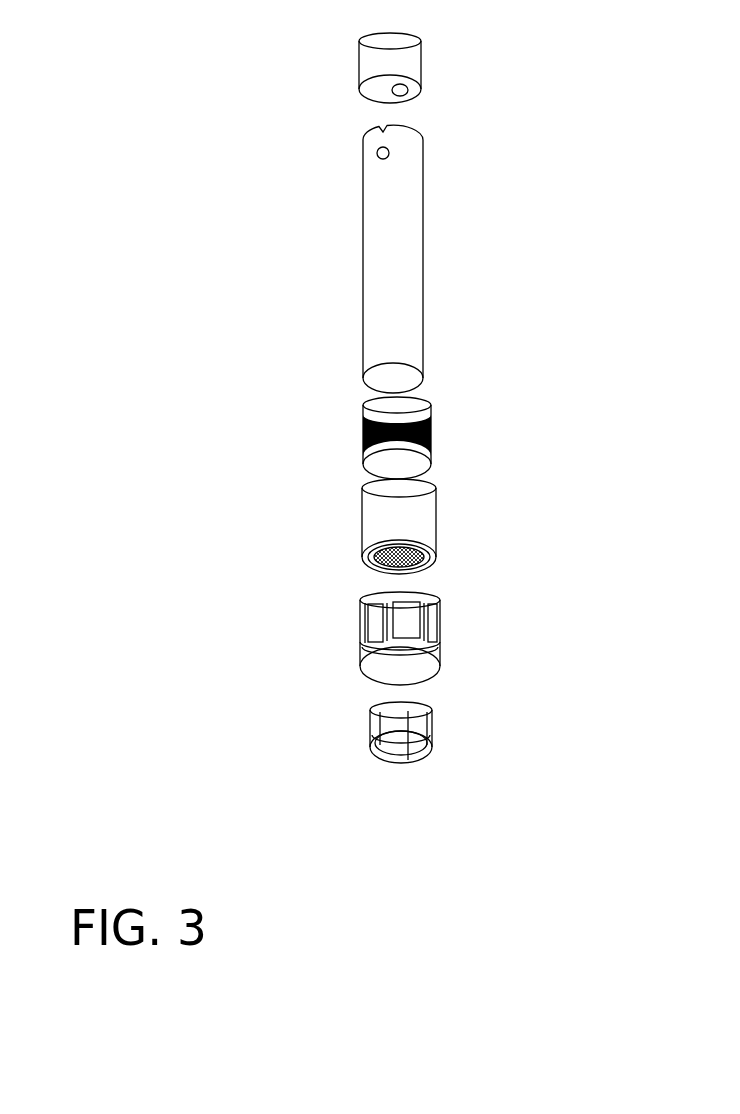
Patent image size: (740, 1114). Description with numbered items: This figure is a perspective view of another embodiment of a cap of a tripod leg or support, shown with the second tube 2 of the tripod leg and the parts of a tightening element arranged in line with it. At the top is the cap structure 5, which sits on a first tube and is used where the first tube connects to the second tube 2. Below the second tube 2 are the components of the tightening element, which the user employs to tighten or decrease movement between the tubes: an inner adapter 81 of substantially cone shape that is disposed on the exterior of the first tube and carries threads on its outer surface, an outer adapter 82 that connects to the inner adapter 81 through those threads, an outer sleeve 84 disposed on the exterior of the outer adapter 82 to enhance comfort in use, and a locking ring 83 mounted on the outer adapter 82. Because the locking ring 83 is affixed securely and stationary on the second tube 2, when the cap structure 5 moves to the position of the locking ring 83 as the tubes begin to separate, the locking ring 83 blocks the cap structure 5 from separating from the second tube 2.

The cap structure 5 is at (410, 52).
The second tube 2 is at (403, 210).
The inner adapter 81 is at (430, 423).
The outer adapter 82 is at (423, 517).
The outer sleeve 84 is at (440, 617).
The locking ring 83 is at (420, 725).